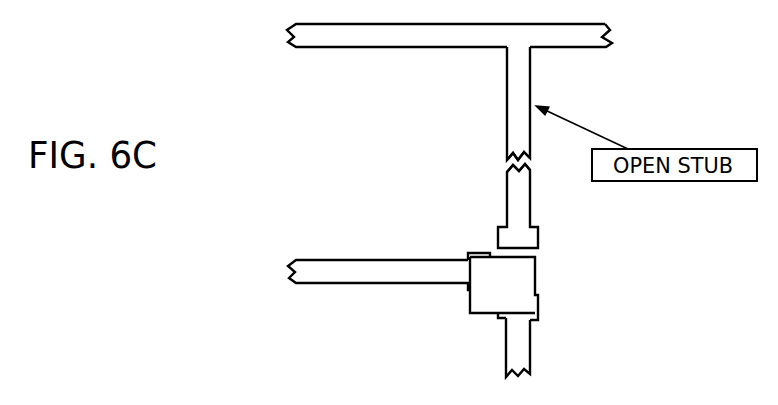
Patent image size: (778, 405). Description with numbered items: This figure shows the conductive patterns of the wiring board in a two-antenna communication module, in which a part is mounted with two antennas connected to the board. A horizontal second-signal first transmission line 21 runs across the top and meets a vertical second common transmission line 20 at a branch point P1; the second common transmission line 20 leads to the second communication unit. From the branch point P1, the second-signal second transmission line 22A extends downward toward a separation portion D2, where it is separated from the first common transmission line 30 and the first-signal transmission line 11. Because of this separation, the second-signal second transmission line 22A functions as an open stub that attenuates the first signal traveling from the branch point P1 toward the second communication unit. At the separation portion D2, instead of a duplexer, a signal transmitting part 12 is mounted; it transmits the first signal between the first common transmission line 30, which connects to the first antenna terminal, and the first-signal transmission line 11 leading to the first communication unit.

The second-signal first transmission line 21 is at (335, 38).
The second common transmission line 20 is at (590, 40).
The second-signal second transmission line 22A is at (510, 136).
The branch point P1 is at (489, 57).
The first common transmission line 30 is at (333, 260).
The signal transmitting part 12 is at (525, 272).
The first-signal transmission line 11 is at (523, 348).
The separation portion D2 is at (547, 254).